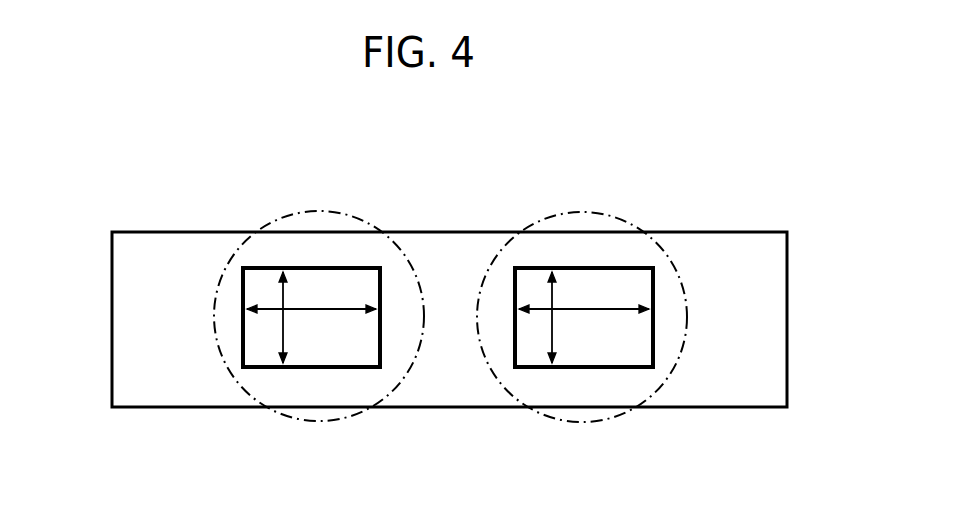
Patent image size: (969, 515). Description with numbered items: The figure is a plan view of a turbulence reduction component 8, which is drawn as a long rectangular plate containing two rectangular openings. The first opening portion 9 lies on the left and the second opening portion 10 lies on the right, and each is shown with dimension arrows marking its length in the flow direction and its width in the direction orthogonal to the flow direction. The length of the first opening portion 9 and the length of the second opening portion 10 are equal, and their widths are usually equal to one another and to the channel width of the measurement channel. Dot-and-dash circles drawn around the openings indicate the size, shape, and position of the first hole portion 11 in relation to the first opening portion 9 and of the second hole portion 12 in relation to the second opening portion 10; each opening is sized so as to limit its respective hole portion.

The turbulence reduction component 8 is at (447, 408).
The first opening portion 9 is at (340, 267).
The second opening portion 10 is at (625, 267).
The first hole portion 11 is at (295, 418).
The second hole portion 12 is at (613, 417).